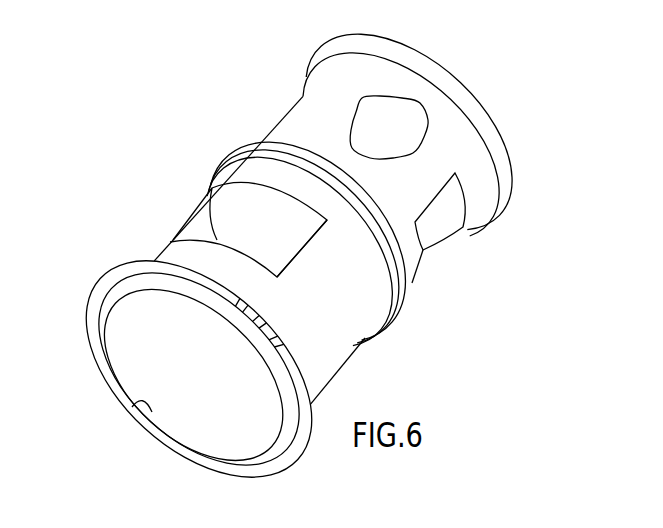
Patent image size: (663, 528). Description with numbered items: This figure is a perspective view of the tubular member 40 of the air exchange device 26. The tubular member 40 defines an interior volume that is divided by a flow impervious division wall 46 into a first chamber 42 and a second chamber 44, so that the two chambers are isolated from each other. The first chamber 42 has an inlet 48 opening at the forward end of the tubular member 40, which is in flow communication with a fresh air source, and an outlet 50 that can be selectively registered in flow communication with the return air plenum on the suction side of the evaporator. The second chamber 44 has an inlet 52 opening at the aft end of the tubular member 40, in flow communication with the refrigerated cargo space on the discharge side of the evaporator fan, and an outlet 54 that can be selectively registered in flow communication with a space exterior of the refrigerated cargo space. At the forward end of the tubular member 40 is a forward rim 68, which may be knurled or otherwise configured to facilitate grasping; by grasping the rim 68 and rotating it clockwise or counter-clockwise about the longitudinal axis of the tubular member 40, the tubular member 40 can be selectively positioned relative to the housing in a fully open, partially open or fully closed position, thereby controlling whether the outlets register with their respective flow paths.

The air exchange device 26 is at (158, 130).
The tubular member 40 is at (257, 110).
The first chamber 42 is at (205, 368).
The second chamber 44 is at (403, 138).
The division wall 46 is at (233, 213).
The inlet 48 is at (132, 404).
The outlet 50 is at (305, 242).
The inlet 52 is at (478, 100).
The outlet 54 is at (434, 202).
The forward rim 68 is at (273, 458).